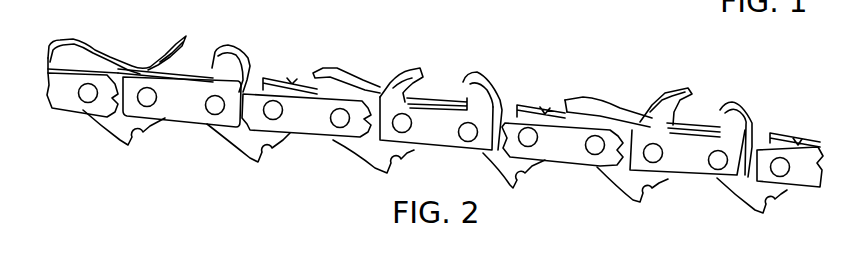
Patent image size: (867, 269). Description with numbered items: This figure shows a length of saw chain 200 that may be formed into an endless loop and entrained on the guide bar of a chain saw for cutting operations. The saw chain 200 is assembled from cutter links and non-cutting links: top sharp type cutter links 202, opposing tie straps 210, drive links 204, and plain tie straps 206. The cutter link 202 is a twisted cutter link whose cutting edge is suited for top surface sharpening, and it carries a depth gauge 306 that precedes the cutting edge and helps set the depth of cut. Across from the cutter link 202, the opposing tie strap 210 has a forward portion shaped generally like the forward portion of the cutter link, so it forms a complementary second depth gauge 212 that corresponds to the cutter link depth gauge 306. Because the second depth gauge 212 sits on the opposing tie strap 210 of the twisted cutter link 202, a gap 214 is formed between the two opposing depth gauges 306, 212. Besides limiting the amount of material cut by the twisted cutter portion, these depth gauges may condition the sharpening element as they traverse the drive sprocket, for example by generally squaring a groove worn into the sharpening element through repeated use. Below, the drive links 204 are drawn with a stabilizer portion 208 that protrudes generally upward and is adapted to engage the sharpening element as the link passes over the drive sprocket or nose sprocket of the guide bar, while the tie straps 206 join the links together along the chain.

The saw chain 200 is at (309, 29).
The cutter link 202 is at (462, 83).
The drive link 204 is at (620, 112).
The tie strap 206 is at (318, 120).
The stabilizer portion 208 is at (572, 98).
The opposing tie strap 210 is at (183, 106).
The tie strap depth gauge 212 is at (213, 58).
The gap 214 is at (700, 115).
The depth gauge 306 is at (747, 101).